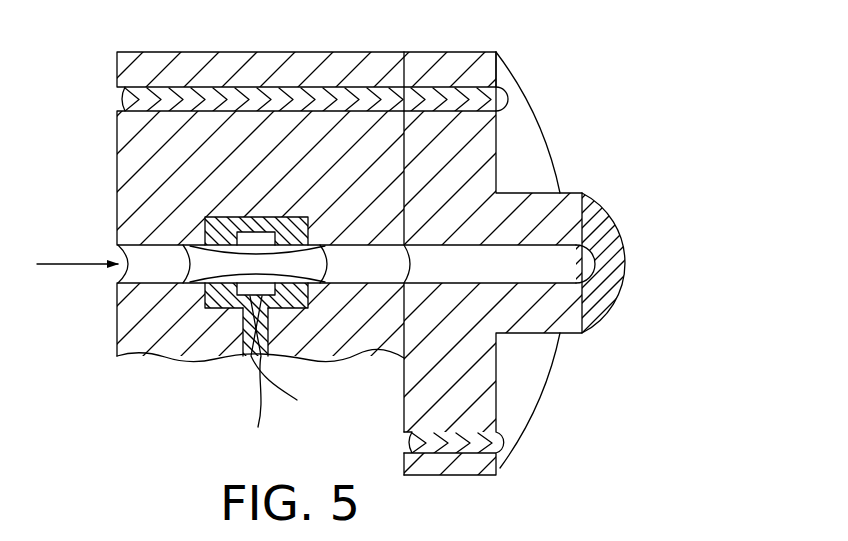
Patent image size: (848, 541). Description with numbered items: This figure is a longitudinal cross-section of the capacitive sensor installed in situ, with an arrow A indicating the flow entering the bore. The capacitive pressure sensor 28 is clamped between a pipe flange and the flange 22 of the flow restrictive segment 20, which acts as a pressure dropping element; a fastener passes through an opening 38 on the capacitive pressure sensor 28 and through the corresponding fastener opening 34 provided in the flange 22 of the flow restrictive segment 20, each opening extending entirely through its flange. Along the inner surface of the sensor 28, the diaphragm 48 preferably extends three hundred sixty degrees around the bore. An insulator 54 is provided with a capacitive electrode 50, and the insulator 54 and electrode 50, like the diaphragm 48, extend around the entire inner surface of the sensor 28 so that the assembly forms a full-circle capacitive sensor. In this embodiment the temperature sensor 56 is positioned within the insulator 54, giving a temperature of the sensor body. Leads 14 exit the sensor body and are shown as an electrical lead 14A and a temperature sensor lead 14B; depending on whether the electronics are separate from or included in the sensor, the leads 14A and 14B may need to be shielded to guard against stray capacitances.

The flow restrictive segment 20 is at (598, 152).
The flange 22 is at (453, 62).
The capacitive pressure sensor 28 is at (143, 152).
The fastener opening 34 is at (500, 98).
The opening 38 is at (124, 102).
The diaphragm 48 is at (317, 267).
The capacitive electrode 50 is at (263, 233).
The insulator 54 is at (207, 220).
The temperature sensor 56 is at (292, 280).
The leads 14 is at (231, 372).
The electrical lead 14A is at (240, 392).
The temperature sensor lead 14B is at (284, 386).
The flow direction A is at (78, 266).